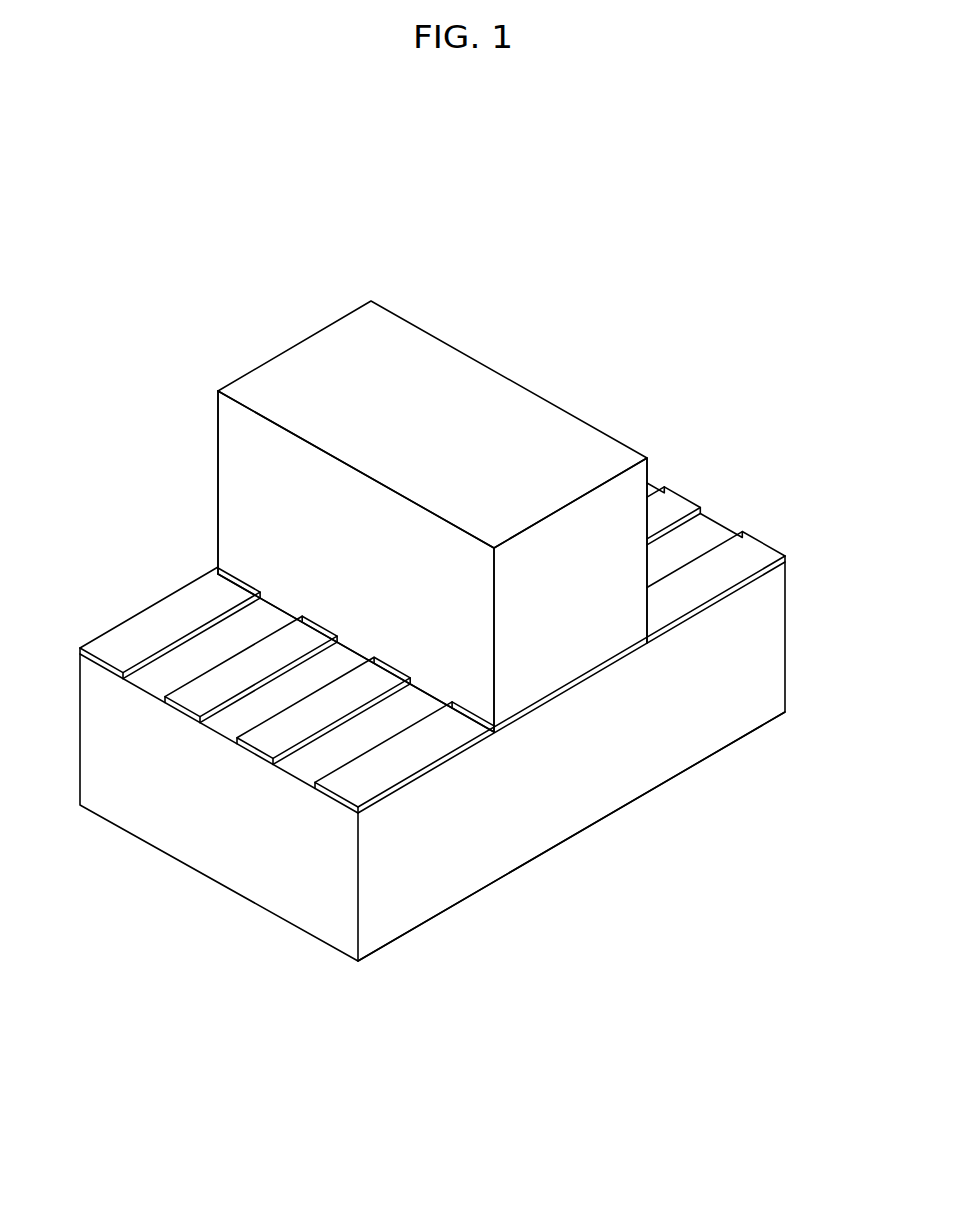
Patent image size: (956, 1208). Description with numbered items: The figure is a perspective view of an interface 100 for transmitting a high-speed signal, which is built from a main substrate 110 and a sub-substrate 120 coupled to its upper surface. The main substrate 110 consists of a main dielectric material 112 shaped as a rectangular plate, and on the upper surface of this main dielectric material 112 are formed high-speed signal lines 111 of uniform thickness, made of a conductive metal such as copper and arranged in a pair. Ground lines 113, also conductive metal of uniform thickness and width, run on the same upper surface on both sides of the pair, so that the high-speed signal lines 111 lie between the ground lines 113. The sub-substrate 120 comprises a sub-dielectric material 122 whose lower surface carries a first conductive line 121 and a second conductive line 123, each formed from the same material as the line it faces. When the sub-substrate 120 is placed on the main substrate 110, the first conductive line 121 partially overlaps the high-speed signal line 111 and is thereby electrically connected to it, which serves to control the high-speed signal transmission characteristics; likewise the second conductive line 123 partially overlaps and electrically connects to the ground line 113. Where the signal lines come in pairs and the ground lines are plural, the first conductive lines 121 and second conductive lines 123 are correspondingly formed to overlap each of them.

The interface for transmitting a high-speed signal 100 is at (590, 321).
The main substrate 110 is at (538, 988).
The high-speed signal line 111 is at (195, 700).
The main dielectric material 112 is at (415, 900).
The ground line 113 is at (172, 613).
The sub-substrate 120 is at (818, 806).
The first conductive line 121 is at (440, 642).
The sub-dielectric material 122 is at (597, 630).
The second conductive line 123 is at (495, 703).